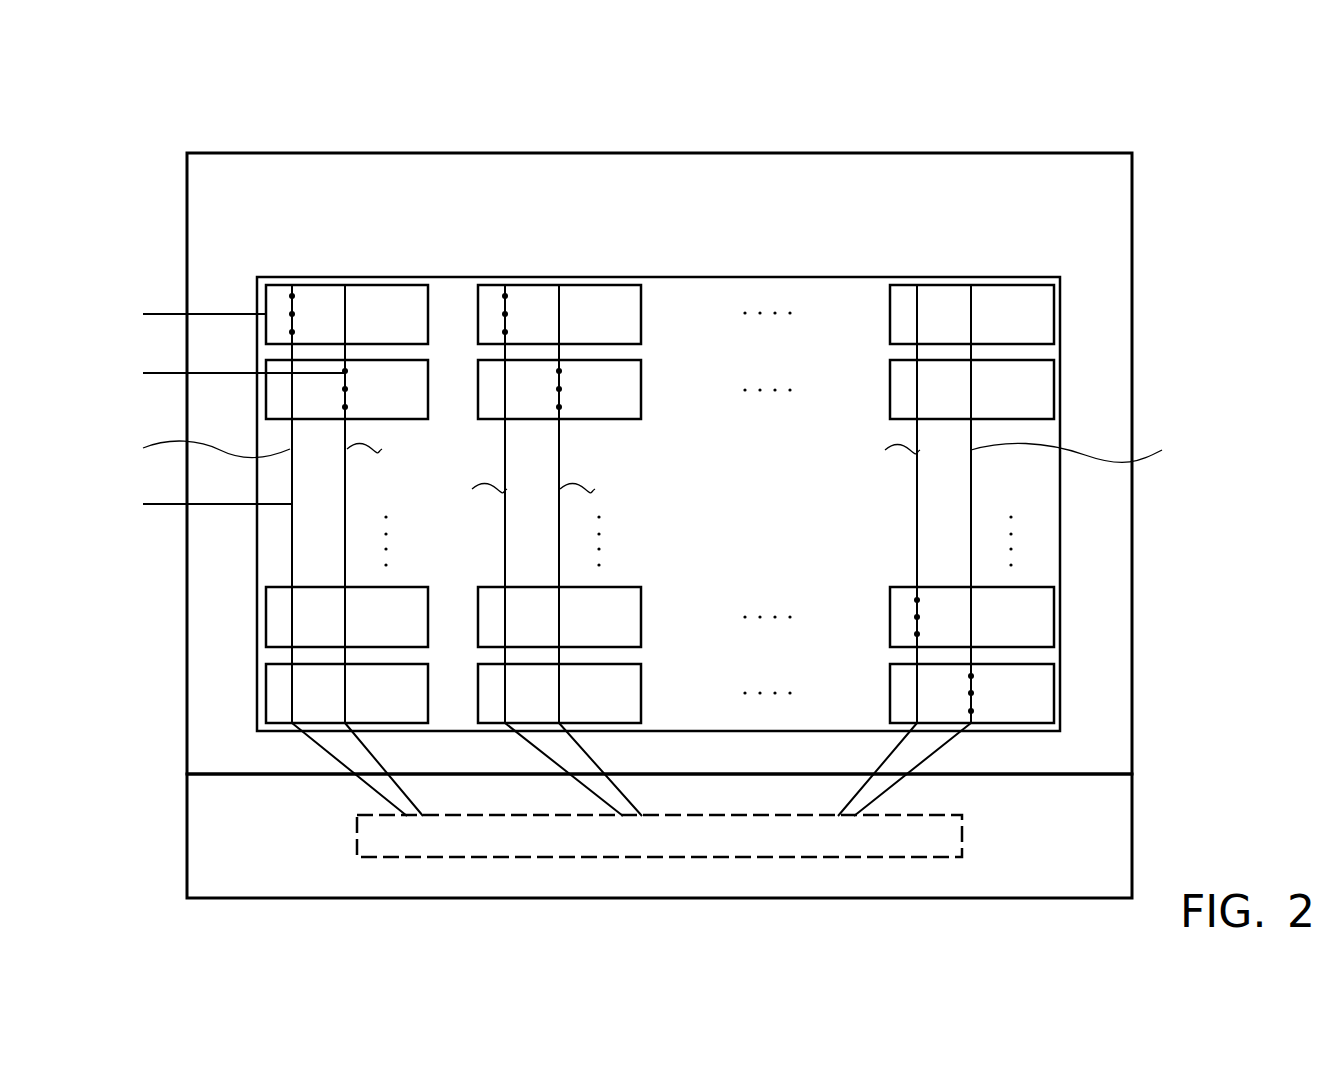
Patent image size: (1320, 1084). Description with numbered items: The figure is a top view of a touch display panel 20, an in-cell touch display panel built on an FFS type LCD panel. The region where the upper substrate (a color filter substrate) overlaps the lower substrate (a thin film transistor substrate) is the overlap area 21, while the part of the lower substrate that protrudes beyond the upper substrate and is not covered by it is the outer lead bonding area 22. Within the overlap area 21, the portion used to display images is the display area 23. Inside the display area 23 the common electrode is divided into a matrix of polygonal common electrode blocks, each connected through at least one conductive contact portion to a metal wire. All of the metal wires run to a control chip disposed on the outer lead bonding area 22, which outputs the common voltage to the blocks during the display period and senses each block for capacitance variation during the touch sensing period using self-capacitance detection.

The touch display panel 20 is at (680, 503).
The overlap area 21 is at (680, 463).
The outer lead bonding (OLB) area 22 is at (227, 836).
The display area 23 is at (1037, 542).